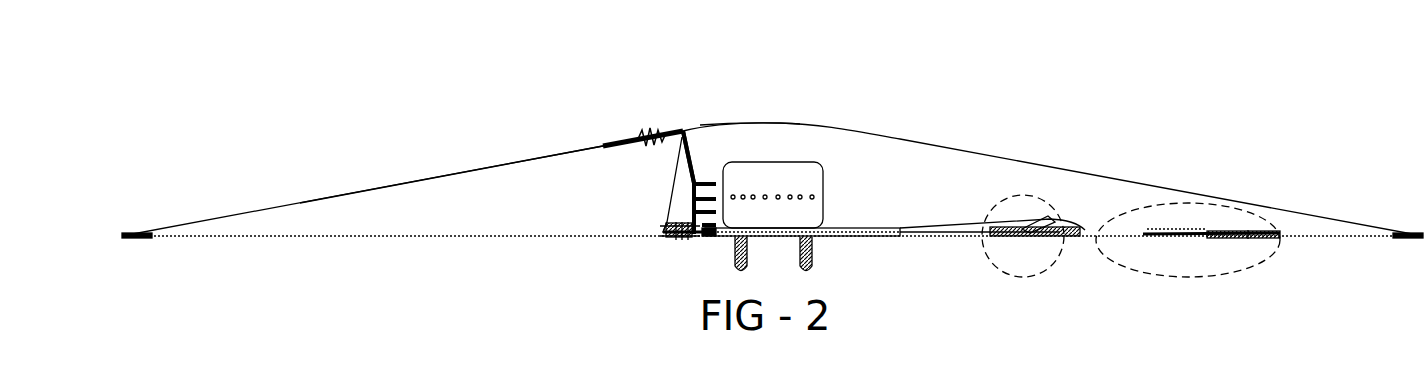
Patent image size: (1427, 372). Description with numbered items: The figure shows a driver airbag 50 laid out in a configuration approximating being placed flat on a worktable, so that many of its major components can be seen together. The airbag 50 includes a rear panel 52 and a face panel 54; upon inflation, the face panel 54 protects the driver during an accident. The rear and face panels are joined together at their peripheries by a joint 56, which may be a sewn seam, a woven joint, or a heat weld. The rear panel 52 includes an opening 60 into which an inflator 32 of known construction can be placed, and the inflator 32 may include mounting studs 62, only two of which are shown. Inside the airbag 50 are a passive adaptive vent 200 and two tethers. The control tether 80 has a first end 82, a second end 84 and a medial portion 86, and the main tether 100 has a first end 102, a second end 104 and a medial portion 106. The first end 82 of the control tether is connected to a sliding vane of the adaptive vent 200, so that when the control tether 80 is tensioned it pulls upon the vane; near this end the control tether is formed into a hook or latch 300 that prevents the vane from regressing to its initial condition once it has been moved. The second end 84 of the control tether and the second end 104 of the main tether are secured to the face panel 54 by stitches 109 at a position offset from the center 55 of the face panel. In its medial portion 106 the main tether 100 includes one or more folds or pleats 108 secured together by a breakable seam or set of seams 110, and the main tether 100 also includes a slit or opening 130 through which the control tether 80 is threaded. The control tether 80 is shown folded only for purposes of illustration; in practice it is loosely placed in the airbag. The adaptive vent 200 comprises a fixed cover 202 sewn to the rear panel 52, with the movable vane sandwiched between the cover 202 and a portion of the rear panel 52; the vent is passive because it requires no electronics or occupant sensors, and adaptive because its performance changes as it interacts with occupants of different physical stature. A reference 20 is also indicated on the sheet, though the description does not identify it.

The vehicle 20 is at (490, 368).
The inflator 32 is at (787, 175).
The airbag 50 is at (437, 167).
The rear panel 52 is at (478, 240).
The face panel 54 is at (515, 160).
The center 55 is at (798, 135).
The joint 56 is at (150, 232).
The opening 60 is at (720, 238).
The mounting studs 62 is at (812, 258).
The control tether 80 is at (692, 160).
The first end 82 is at (1087, 242).
The second end 84 is at (660, 147).
The medial portion 86 is at (692, 181).
The main tether 100 is at (676, 170).
The first end 102 is at (785, 232).
The second end 104 is at (620, 148).
The medial portion 106 is at (670, 180).
The pleats 108 is at (660, 230).
The stitches 109 is at (638, 137).
The breakable seam 110 is at (680, 233).
The slit 130 is at (680, 242).
The passive adaptive vent 200 is at (1143, 255).
The fixed cover 202 is at (1180, 238).
The hook 300 is at (997, 252).